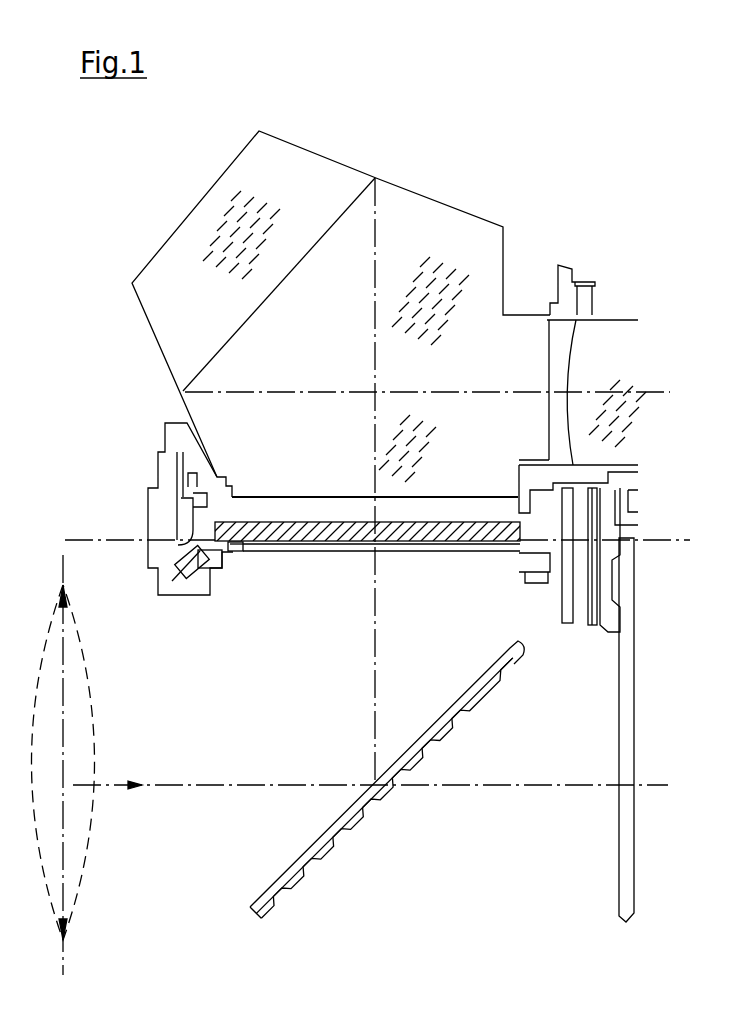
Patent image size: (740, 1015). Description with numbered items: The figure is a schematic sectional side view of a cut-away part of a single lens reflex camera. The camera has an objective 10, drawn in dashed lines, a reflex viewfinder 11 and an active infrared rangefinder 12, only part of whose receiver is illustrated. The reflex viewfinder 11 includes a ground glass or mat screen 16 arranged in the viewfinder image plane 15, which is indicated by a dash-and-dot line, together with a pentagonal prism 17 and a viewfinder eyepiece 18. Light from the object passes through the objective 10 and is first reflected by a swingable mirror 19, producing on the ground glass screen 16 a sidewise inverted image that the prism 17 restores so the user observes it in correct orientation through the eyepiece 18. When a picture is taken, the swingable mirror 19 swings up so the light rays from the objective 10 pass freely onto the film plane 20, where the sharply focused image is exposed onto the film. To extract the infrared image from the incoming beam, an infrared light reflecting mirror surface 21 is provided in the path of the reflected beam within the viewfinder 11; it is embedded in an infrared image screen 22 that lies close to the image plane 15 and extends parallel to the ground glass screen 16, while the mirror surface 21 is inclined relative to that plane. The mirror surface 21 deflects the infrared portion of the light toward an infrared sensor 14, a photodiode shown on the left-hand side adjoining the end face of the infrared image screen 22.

The objective 10 is at (72, 862).
The reflex viewfinder 11 is at (620, 398).
The active infrared rangefinder 12 is at (266, 567).
The infrared sensor 14 is at (237, 547).
The viewfinder image plane 15 is at (668, 541).
The ground glass screen 16 is at (220, 522).
The pentagonal prism 17 is at (283, 150).
The viewfinder eyepiece 18 is at (598, 340).
The swingable mirror 19 is at (447, 718).
The film plane 20 is at (634, 870).
The infrared light reflecting mirror surface 21 is at (372, 548).
The infrared image screen 22 is at (357, 550).